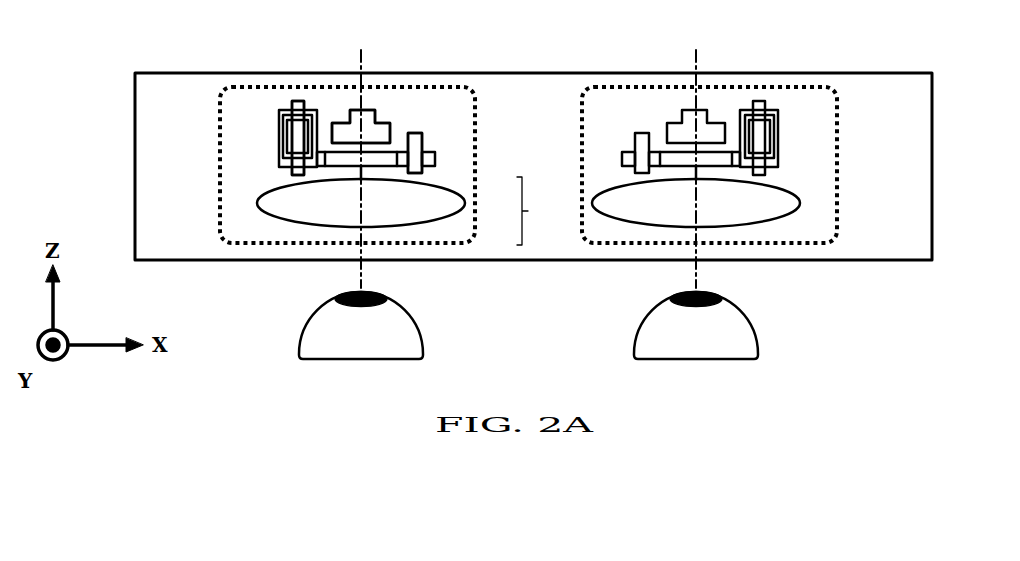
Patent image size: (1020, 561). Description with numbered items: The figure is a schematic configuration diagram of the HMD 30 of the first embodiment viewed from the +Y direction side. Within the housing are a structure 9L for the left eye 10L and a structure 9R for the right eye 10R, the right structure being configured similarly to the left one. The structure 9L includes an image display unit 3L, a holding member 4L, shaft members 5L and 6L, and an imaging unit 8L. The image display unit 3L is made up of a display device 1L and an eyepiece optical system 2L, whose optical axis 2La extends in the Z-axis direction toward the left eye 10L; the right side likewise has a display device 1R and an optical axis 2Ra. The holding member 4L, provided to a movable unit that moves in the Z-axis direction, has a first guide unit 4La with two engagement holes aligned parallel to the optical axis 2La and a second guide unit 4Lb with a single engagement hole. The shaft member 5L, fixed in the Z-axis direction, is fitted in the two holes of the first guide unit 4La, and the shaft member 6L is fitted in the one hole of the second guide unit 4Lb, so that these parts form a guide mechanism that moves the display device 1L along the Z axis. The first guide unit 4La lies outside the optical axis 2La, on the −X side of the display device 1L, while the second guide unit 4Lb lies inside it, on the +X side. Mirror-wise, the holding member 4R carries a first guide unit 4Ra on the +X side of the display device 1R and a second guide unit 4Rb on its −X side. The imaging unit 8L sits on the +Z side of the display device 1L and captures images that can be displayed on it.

The HMD 30 is at (139, 62).
The structure for the left eye 9L is at (220, 210).
The structure for the right eye 9R is at (837, 214).
The display device 1L is at (385, 167).
The display device 1R is at (732, 168).
The eyepiece optical system 2L is at (452, 217).
The image display unit 3L is at (539, 211).
The holding member 4L is at (437, 160).
The first guide unit 4La is at (279, 117).
The second guide unit 4Lb is at (436, 150).
The holding member 4R is at (628, 157).
The first guide unit 4Ra is at (778, 114).
The second guide unit 4Rb is at (633, 150).
The shaft member 5L is at (297, 101).
The shaft member 6L is at (415, 133).
The imaging unit 8L is at (353, 110).
The optical axis 2La is at (360, 268).
The optical axis 2Ra is at (696, 268).
The left eye 10L is at (353, 308).
The right eye 10R is at (708, 308).